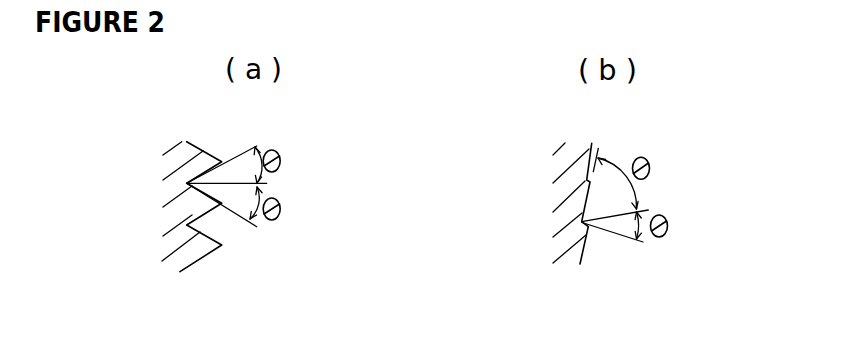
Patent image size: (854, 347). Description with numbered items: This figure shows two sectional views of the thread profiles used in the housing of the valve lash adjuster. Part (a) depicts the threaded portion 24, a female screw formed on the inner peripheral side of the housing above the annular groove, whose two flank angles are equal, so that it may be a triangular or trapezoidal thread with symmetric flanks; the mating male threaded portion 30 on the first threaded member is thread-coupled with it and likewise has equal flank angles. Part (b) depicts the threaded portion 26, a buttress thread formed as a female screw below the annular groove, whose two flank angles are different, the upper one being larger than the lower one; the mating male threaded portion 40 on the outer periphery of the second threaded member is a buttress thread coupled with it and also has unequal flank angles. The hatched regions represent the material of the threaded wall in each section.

The threaded portion 24 is at (207, 263).
The threaded portion 30 is at (266, 223).
The threaded portion 26 is at (587, 248).
The threaded portion 40 is at (647, 224).